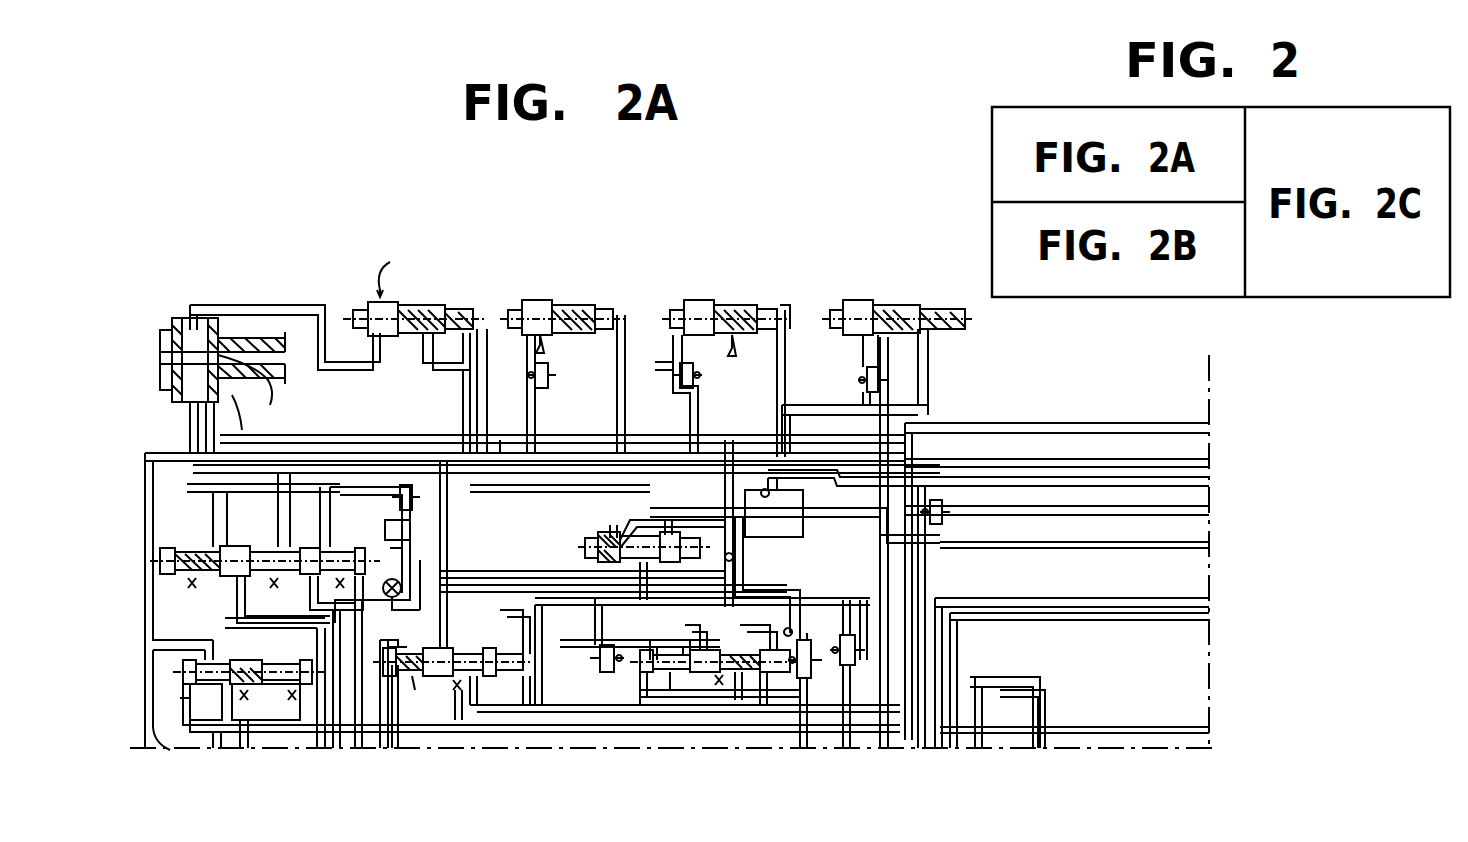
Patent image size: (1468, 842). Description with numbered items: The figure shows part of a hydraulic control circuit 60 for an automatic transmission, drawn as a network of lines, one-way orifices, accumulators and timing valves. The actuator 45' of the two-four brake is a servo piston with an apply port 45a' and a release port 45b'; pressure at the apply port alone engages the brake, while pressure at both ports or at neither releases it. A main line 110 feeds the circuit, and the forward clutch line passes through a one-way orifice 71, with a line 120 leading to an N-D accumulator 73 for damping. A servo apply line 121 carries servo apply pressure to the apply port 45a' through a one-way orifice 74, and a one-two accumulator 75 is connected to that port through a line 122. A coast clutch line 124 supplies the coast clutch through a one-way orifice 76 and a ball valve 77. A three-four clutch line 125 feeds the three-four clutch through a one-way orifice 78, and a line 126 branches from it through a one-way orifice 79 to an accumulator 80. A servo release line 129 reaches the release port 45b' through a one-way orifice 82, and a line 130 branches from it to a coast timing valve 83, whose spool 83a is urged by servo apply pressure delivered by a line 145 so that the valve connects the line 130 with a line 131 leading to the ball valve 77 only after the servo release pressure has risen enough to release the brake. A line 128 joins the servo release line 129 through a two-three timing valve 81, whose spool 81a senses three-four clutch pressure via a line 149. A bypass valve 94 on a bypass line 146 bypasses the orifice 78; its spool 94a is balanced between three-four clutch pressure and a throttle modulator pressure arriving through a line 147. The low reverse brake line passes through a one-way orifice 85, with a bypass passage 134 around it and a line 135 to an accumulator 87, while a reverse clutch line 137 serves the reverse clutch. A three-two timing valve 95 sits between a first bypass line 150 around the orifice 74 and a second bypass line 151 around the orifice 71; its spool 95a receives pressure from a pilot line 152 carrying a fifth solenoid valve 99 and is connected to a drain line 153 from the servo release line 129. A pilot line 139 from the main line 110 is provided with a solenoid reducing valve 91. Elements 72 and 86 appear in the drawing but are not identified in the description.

The hydraulic control circuit 60 is at (400, 212).
The actuator 45' is at (195, 360).
The apply port 45a' is at (154, 427).
The release port 45b' is at (241, 333).
The spool 95a is at (258, 420).
The line 122 is at (300, 300).
The 1-2 accumulator 75 is at (408, 300).
The accumulator 80 is at (560, 300).
The N-D accumulator 73 is at (712, 300).
The line 72 is at (660, 365).
The orifice line 86 is at (866, 378).
The accumulator 87 is at (862, 302).
The one-way orifice 79 is at (556, 385).
The one-way orifice 82 is at (496, 448).
The spool 83a is at (690, 448).
The line 120 is at (700, 415).
The coast clutch line 124 is at (818, 440).
The ball valve 77 is at (762, 487).
The reverse clutch line 137 is at (925, 445).
The servo apply line 121 is at (380, 480).
The drain line 153 is at (295, 520).
The one-way orifice 74 is at (405, 485).
The line 126 is at (555, 465).
The second bypass line 151 is at (215, 510).
The 3-2 timing valve 95 is at (180, 548).
The first bypass line 150 is at (318, 535).
The servo release line 129 is at (447, 560).
The line 145 is at (540, 572).
The coast timing valve 83 is at (608, 523).
The line 131 is at (670, 532).
The line 130 is at (660, 650).
The one-way orifice 71 is at (944, 528).
The line 149 is at (995, 598).
The line 135 is at (1100, 540).
The bypass passage 134 is at (945, 645).
The line 128 is at (1045, 684).
The 3-4 clutch line 125 is at (848, 518).
The main line 110 is at (165, 745).
The solenoid reducing valve 91 is at (262, 700).
The pilot line 152 is at (372, 735).
The fifth solenoid valve 99 is at (410, 700).
The line 147 is at (400, 720).
The bypass valve 94 is at (518, 640).
The spool 94a is at (485, 720).
The bypass line 146 is at (540, 720).
The pilot line 139 is at (580, 735).
The one-way orifice 78 is at (598, 658).
The 2-3 timing valve 81 is at (765, 705).
The spool 81a is at (735, 705).
The one-way orifice 76 is at (812, 700).
The one-way orifice 85 is at (875, 700).